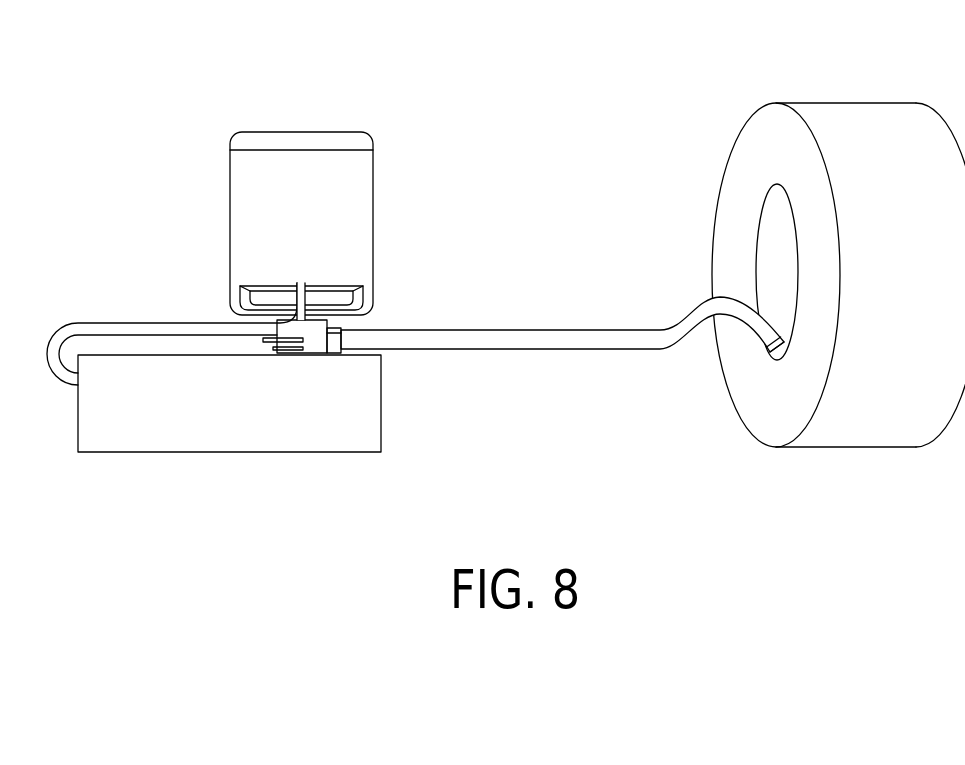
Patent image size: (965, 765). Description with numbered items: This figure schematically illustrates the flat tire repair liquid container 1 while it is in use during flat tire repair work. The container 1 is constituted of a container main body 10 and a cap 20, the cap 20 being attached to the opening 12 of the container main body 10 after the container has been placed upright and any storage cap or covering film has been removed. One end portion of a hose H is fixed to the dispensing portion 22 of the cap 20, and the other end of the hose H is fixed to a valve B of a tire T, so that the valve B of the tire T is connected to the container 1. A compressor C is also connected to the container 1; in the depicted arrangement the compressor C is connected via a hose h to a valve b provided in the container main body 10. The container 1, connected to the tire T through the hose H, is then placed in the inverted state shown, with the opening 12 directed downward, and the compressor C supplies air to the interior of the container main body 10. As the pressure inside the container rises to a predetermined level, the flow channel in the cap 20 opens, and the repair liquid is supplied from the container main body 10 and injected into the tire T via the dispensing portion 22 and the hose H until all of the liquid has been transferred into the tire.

The flat tire repair liquid container 1 is at (331, 240).
The container main body 10 is at (373, 197).
The opening 12 is at (335, 300).
The valve b is at (300, 292).
The cap 20 is at (322, 322).
The dispensing portion 22 is at (328, 356).
The hose h is at (97, 322).
The hose H is at (548, 330).
The valve B is at (767, 353).
The tire T is at (860, 104).
The compressor C is at (223, 447).